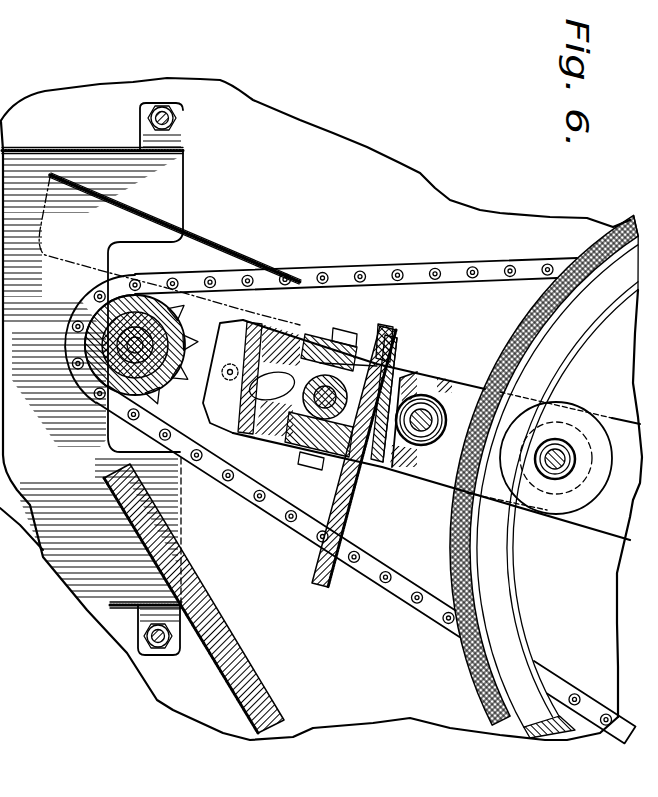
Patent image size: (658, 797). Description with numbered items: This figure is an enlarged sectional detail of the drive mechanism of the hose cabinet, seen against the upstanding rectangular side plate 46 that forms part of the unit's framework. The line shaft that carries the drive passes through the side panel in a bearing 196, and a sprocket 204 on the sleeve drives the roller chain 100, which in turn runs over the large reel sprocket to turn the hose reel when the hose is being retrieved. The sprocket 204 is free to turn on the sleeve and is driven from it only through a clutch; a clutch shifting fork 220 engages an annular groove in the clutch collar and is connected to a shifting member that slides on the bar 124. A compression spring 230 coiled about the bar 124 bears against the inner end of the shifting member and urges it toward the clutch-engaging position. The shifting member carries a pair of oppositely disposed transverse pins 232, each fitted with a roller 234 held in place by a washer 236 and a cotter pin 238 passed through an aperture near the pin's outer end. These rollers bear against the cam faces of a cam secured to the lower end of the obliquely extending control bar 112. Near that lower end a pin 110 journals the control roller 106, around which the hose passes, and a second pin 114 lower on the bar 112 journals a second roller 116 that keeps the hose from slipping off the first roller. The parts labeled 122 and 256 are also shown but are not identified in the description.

The side plate 46 is at (306, 687).
The roller chain 100 is at (367, 572).
The control roller 106 is at (582, 502).
The pin 110 is at (557, 472).
The control bar 112 is at (390, 463).
The pin 114 is at (423, 432).
The second roller 116 is at (443, 410).
The slide block 122 is at (280, 340).
The bar 124 is at (300, 385).
The bearing 196 is at (100, 297).
The sprocket 204 is at (160, 383).
The clutch shifting fork 220 is at (256, 430).
The compression spring 230 is at (318, 352).
The pin 232 is at (347, 333).
The roller 234 is at (270, 438).
The washer 236 is at (292, 448).
The cotter pin 238 is at (318, 452).
The frame casting 256 is at (143, 418).